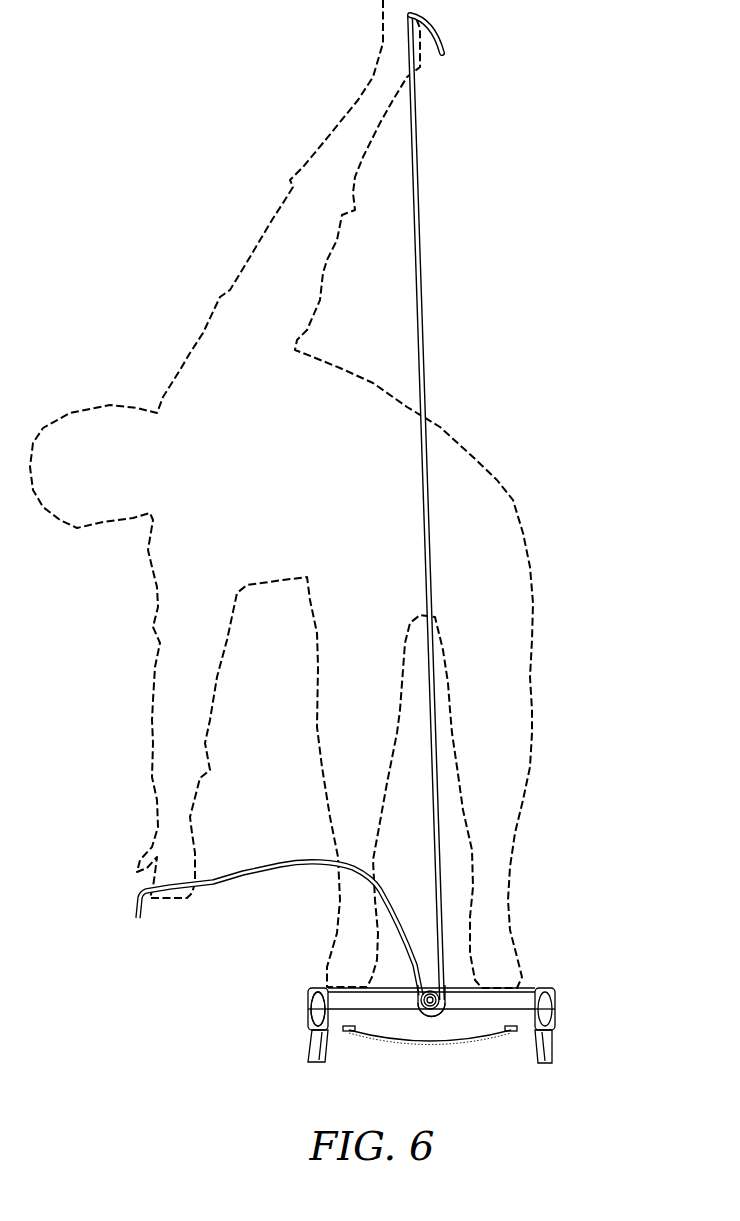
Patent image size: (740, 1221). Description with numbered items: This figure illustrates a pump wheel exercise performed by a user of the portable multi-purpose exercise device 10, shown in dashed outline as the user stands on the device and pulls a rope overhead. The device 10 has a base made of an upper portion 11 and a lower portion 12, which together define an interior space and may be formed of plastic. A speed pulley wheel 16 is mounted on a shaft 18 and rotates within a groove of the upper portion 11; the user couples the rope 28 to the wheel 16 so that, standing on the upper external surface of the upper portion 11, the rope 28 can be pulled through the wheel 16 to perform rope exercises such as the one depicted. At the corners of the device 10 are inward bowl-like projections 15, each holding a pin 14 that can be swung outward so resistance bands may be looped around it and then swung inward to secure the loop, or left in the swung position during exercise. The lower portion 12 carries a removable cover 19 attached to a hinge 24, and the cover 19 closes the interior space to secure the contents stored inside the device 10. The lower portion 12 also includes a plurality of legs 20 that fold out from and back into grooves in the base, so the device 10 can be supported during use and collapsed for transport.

The multi-purpose exercise device 10 is at (443, 1012).
The upper portion 11 is at (556, 996).
The lower portion 12 is at (556, 1022).
The pin 14 is at (316, 1010).
The inward bowl-like projection 15 is at (310, 992).
The speed pulley wheel 16 is at (432, 990).
The shaft 18 is at (428, 1012).
The removable cover 19 is at (438, 1042).
The leg 20 is at (553, 1052).
The hinge 24 is at (514, 1033).
The rope 28 is at (248, 882).